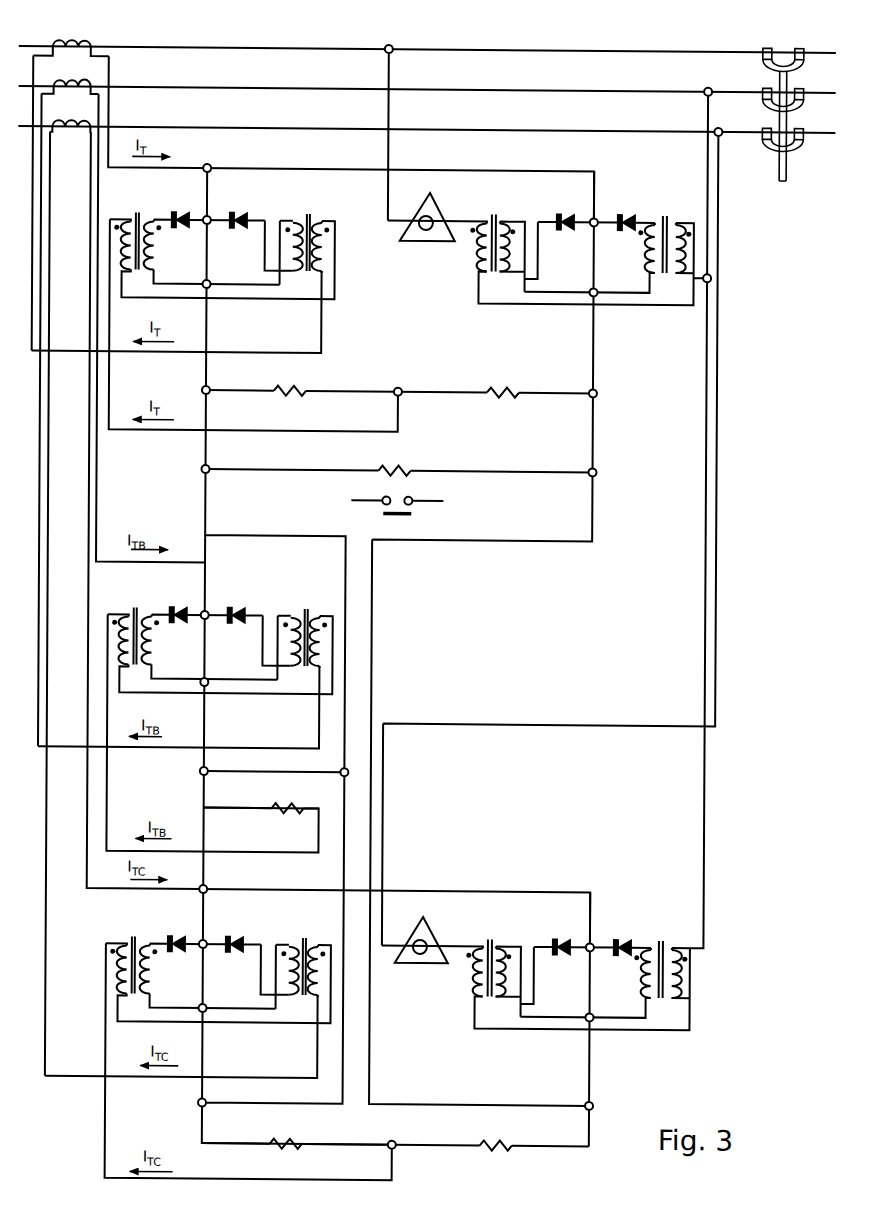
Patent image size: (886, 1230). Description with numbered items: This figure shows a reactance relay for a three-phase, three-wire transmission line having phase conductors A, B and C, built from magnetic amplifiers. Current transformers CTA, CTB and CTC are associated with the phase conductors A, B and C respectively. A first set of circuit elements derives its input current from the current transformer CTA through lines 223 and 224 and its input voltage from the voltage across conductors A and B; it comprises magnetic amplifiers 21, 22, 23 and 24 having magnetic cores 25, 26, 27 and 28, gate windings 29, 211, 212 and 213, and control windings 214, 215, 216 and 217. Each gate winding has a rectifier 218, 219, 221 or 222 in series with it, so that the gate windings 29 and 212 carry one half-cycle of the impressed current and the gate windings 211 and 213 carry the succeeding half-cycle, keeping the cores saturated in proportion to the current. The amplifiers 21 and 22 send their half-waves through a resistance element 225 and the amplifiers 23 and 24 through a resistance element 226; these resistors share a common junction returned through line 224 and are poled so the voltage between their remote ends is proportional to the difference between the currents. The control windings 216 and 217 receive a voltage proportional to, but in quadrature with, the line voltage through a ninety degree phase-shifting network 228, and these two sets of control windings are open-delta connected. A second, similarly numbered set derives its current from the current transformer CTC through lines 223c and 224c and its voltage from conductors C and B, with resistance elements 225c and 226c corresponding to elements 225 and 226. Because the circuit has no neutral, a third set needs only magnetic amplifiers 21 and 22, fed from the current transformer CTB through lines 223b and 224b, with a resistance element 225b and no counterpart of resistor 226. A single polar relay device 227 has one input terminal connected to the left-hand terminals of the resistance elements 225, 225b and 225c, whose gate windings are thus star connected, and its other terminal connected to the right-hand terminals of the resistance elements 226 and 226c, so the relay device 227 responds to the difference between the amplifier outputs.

The phase conductor A is at (620, 47).
The phase conductor B is at (620, 87).
The phase conductor C is at (620, 127).
The current transformer CTA is at (84, 20).
The current transformer CTB is at (84, 63).
The current transformer CTC is at (84, 103).
The magnetic amplifier 21 is at (146, 203).
The magnetic amplifier 22 is at (311, 199).
The magnetic amplifier 23 is at (494, 200).
The magnetic amplifier 24 is at (667, 211).
The magnetic core 25 is at (132, 268).
The magnetic core 26 is at (310, 272).
The magnetic core 27 is at (500, 283).
The magnetic core 28 is at (670, 283).
The gate winding 29 is at (155, 246).
The gate winding 211 is at (293, 247).
The gate winding 212 is at (508, 250).
The gate winding 213 is at (648, 250).
The control winding 214 is at (126, 258).
The control winding 215 is at (327, 252).
The control winding 216 is at (478, 250).
The control winding 217 is at (688, 250).
The rectifier 218 is at (191, 207).
The rectifier 219 is at (248, 207).
The rectifier 221 is at (575, 208).
The rectifier 222 is at (636, 208).
The line 223 is at (160, 170).
The line 223b is at (177, 565).
The line 223c is at (121, 893).
The line 224 is at (243, 353).
The line 224b is at (237, 748).
The line 224c is at (85, 1078).
The resistance element 225 is at (300, 396).
The resistance element 225b is at (305, 818).
The resistance element 225c is at (292, 1152).
The resistance element 226 is at (490, 401).
The resistance element 226c is at (507, 1154).
The polar relay device 227 is at (398, 485).
The phase-shifting network 228 is at (428, 202).